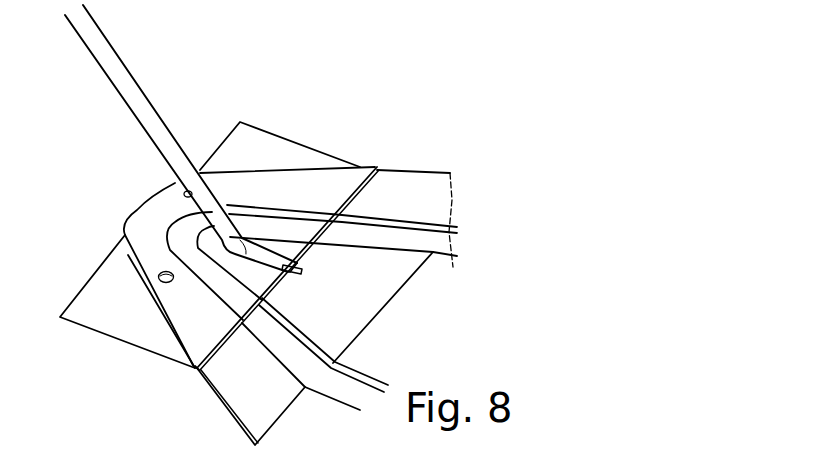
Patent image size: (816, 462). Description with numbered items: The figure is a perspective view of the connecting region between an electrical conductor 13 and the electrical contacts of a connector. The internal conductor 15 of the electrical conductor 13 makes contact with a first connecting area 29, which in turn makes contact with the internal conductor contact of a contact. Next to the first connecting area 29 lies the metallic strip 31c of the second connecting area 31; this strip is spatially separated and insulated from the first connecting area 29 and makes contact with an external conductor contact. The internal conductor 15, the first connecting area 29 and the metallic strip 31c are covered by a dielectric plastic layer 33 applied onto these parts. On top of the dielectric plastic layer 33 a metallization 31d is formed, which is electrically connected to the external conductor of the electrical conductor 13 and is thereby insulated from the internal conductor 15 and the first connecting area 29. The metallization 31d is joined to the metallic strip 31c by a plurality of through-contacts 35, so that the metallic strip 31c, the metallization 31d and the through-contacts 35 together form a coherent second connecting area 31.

The electrical conductor 13 is at (140, 106).
The internal conductor 15 is at (302, 270).
The first connecting area 29 is at (355, 298).
The second connecting area 31 is at (208, 320).
The metallic strip 31c is at (430, 207).
The metallization 31d is at (332, 202).
The dielectric plastic layer 33 is at (198, 372).
The through-contact 35 is at (184, 194).